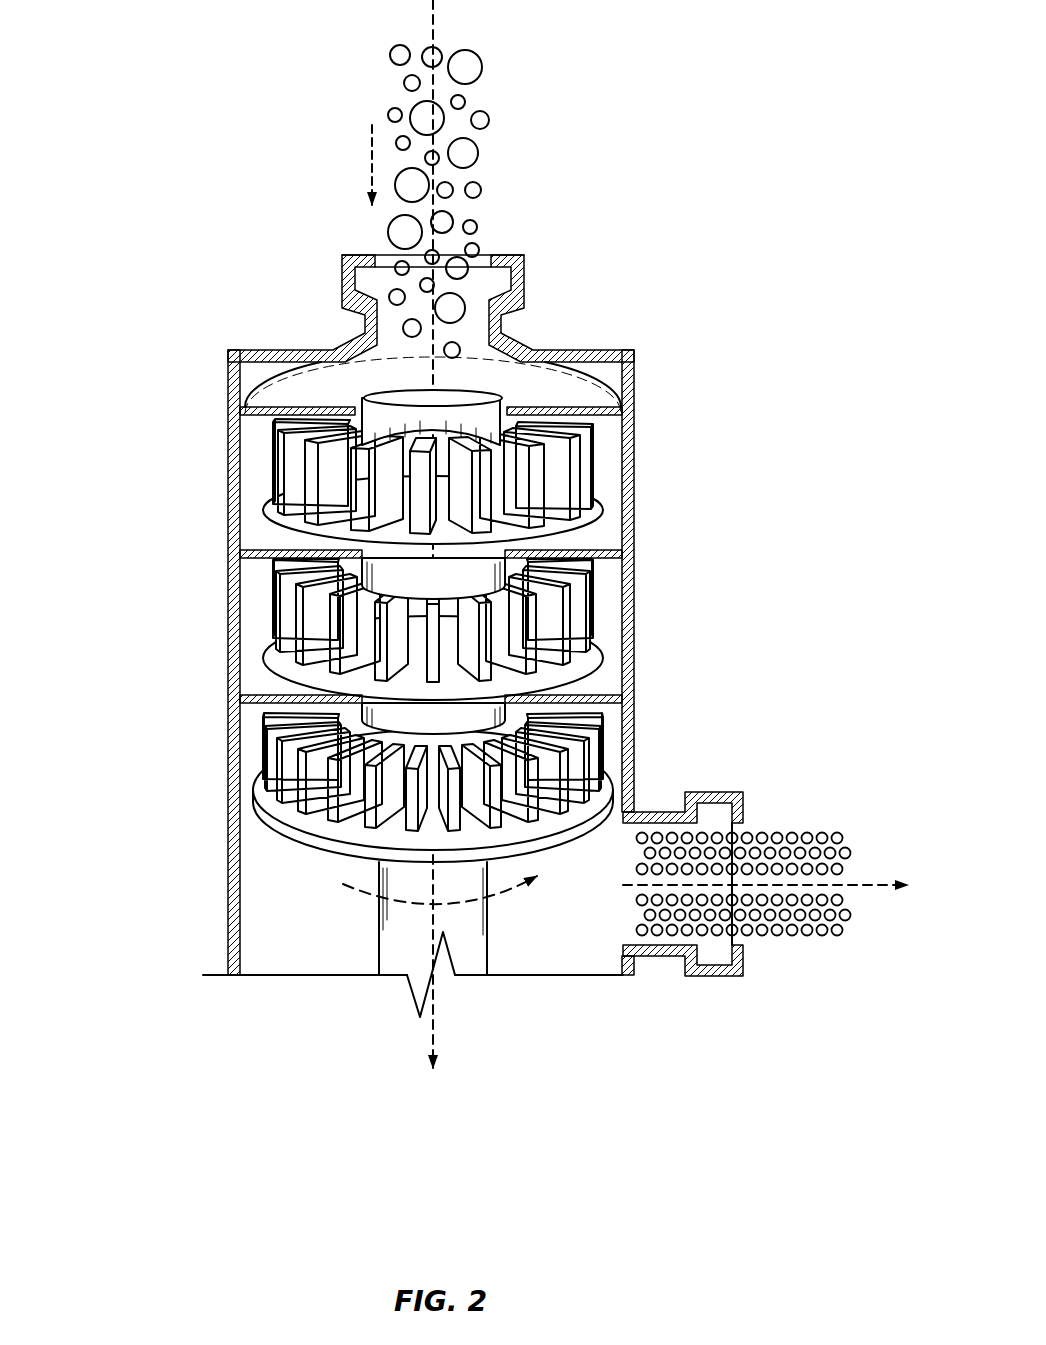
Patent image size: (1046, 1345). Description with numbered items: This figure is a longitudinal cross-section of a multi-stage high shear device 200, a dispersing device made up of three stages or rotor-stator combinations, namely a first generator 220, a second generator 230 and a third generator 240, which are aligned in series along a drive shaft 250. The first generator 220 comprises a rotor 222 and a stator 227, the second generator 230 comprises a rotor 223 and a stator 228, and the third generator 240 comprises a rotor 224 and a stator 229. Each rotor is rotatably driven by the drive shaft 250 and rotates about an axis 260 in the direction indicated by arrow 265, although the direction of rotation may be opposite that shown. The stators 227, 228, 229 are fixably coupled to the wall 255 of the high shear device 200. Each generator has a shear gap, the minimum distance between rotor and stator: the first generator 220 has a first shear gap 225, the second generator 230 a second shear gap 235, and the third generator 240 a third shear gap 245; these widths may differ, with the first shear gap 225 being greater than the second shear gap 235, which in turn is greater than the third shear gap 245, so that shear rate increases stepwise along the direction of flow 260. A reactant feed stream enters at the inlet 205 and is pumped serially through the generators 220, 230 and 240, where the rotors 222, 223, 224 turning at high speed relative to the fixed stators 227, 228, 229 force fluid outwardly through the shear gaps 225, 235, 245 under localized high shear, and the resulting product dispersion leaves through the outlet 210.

The high shear device 200 is at (501, 539).
The inlet 205 is at (479, 240).
The outlet 210 is at (866, 891).
The first generator 220 is at (430, 454).
The rotor 222 is at (490, 467).
The rotor 223 is at (490, 628).
The rotor 224 is at (488, 782).
The first shear gap 225 is at (515, 440).
The stator 227 is at (589, 401).
The stator 228 is at (589, 539).
The stator 229 is at (589, 679).
The second generator 230 is at (430, 600).
The second shear gap 235 is at (515, 576).
The third generator 240 is at (432, 751).
The third shear gap 245 is at (515, 720).
The drive shaft 250 is at (392, 950).
The wall 255 is at (227, 357).
The axis of rotation 260 is at (428, 1034).
The arrow 265 is at (500, 900).